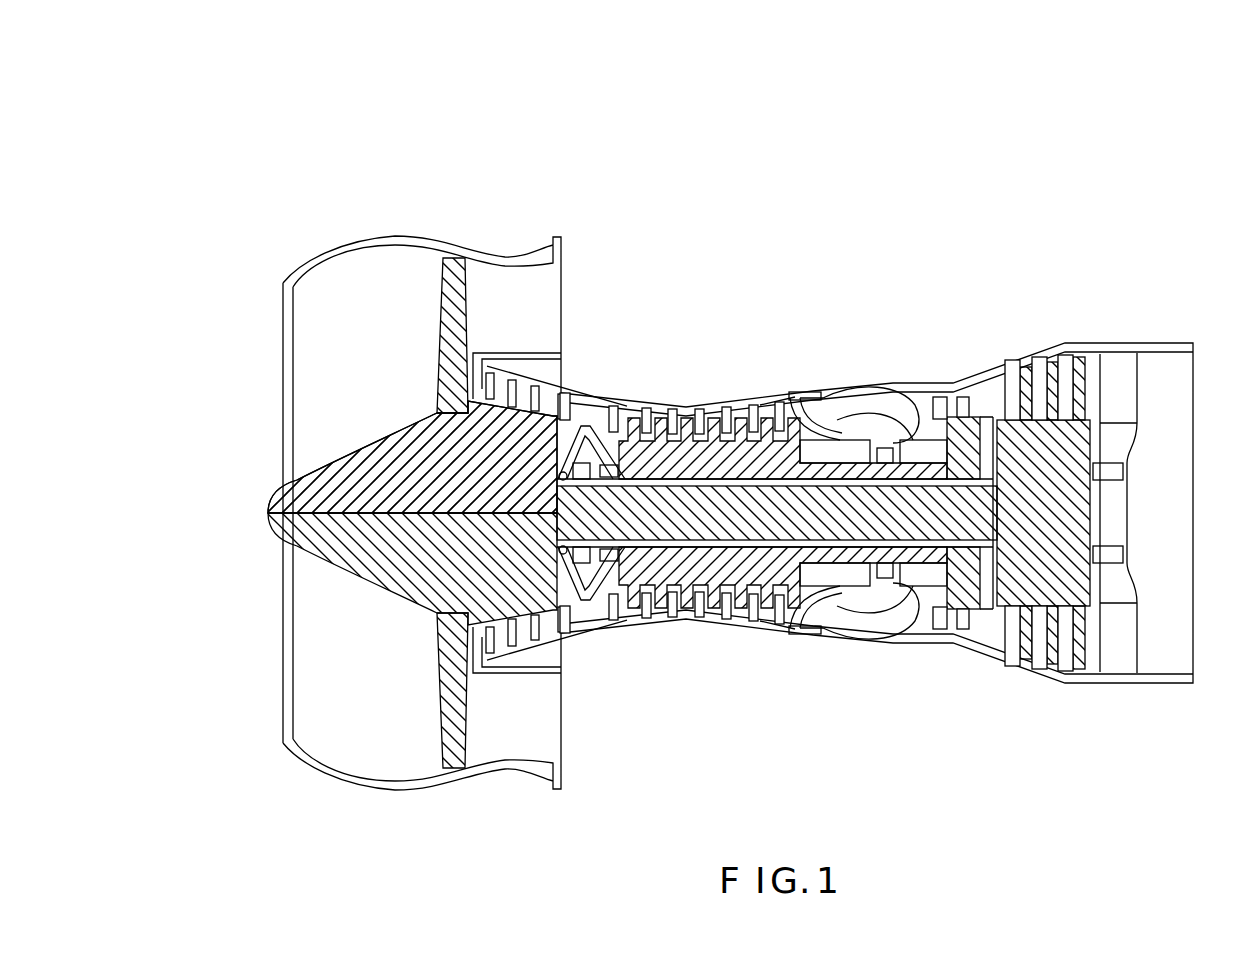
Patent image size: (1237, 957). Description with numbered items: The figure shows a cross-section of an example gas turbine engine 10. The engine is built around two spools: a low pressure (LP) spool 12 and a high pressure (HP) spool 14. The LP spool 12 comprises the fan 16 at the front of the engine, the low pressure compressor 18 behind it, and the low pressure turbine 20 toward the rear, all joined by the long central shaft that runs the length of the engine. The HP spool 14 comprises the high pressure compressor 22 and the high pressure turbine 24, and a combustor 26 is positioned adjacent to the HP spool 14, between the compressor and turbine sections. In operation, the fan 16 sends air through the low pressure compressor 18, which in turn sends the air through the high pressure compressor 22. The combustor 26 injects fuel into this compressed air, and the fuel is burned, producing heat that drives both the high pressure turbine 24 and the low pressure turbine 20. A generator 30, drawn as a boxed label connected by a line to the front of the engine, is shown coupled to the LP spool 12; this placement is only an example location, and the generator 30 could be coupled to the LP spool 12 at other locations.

The gas turbine engine 10 is at (372, 164).
The low pressure (LP) spool 12 is at (333, 543).
The high pressure (HP) spool 14 is at (628, 595).
The fan 16 is at (410, 458).
The low pressure compressor 18 is at (558, 400).
The low pressure turbine 20 is at (1057, 457).
The high pressure compressor 22 is at (717, 455).
The high pressure turbine 24 is at (921, 607).
The combustor 26 is at (890, 420).
The generator 30 is at (585, 463).